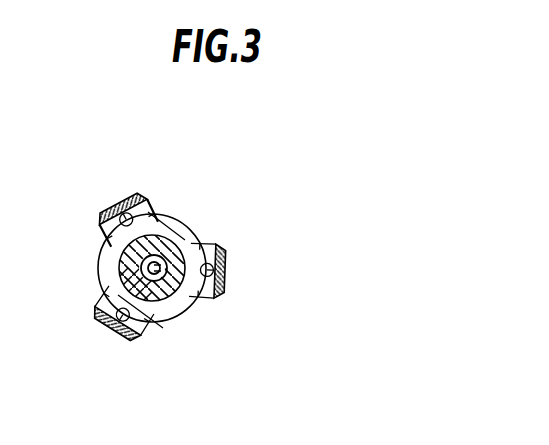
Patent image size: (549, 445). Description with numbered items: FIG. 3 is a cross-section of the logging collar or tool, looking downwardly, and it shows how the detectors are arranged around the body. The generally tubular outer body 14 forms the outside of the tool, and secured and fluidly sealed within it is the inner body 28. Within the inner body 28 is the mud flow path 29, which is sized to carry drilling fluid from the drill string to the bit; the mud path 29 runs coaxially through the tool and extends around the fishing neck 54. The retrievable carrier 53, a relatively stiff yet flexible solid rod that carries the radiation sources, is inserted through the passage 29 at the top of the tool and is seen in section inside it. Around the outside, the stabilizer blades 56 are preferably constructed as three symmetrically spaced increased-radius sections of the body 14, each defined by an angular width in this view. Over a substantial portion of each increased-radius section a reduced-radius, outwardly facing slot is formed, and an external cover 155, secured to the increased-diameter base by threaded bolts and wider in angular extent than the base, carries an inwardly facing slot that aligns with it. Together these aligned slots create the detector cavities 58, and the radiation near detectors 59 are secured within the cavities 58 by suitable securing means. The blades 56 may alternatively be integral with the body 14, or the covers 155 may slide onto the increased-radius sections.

The outer body 14 is at (168, 234).
The inner body 28 is at (152, 240).
The mud flow path 29 is at (196, 233).
The carrier 53 is at (178, 298).
The fishing neck 54 is at (170, 298).
The stabilizer blades 56 is at (95, 211).
The cavities 58 is at (106, 237).
The near detectors 59 is at (129, 207).
The external cover 155 is at (113, 210).